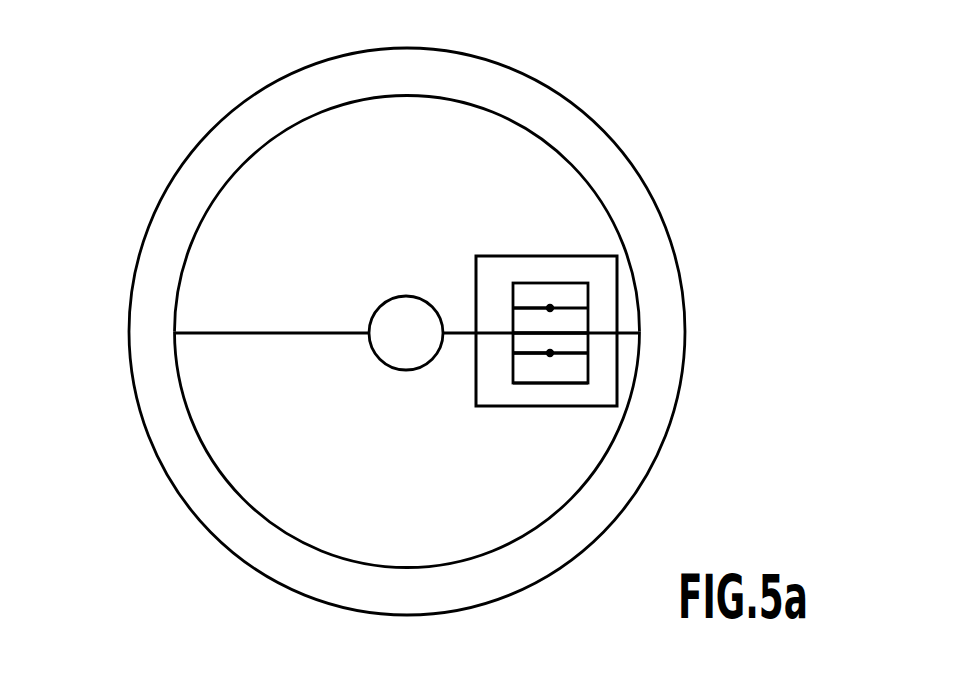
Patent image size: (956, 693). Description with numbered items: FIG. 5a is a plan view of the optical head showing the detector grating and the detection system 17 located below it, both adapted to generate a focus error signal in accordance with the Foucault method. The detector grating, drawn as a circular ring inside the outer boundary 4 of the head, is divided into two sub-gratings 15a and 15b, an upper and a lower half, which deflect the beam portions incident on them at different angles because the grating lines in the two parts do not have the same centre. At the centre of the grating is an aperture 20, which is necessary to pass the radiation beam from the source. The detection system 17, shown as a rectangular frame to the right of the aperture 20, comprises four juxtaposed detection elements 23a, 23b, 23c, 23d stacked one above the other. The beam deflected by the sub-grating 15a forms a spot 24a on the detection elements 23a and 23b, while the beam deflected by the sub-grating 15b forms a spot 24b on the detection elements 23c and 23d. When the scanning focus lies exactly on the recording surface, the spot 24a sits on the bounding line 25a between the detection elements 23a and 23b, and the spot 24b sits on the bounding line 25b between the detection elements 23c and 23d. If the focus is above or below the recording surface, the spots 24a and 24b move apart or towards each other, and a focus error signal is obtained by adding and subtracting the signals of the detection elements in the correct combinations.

The outer housing 4 is at (655, 208).
The sub-grating 15a is at (178, 270).
The sub-grating 15b is at (188, 422).
The detection system 17 is at (476, 388).
The aperture 20 is at (378, 360).
The detection element 23a is at (589, 283).
The detection element 23b is at (588, 322).
The detection element 23c is at (588, 342).
The detection element 23d is at (588, 368).
The spot 24a is at (550, 308).
The spot 24b is at (550, 353).
The bounding line 25a is at (522, 308).
The bounding line 25b is at (527, 353).